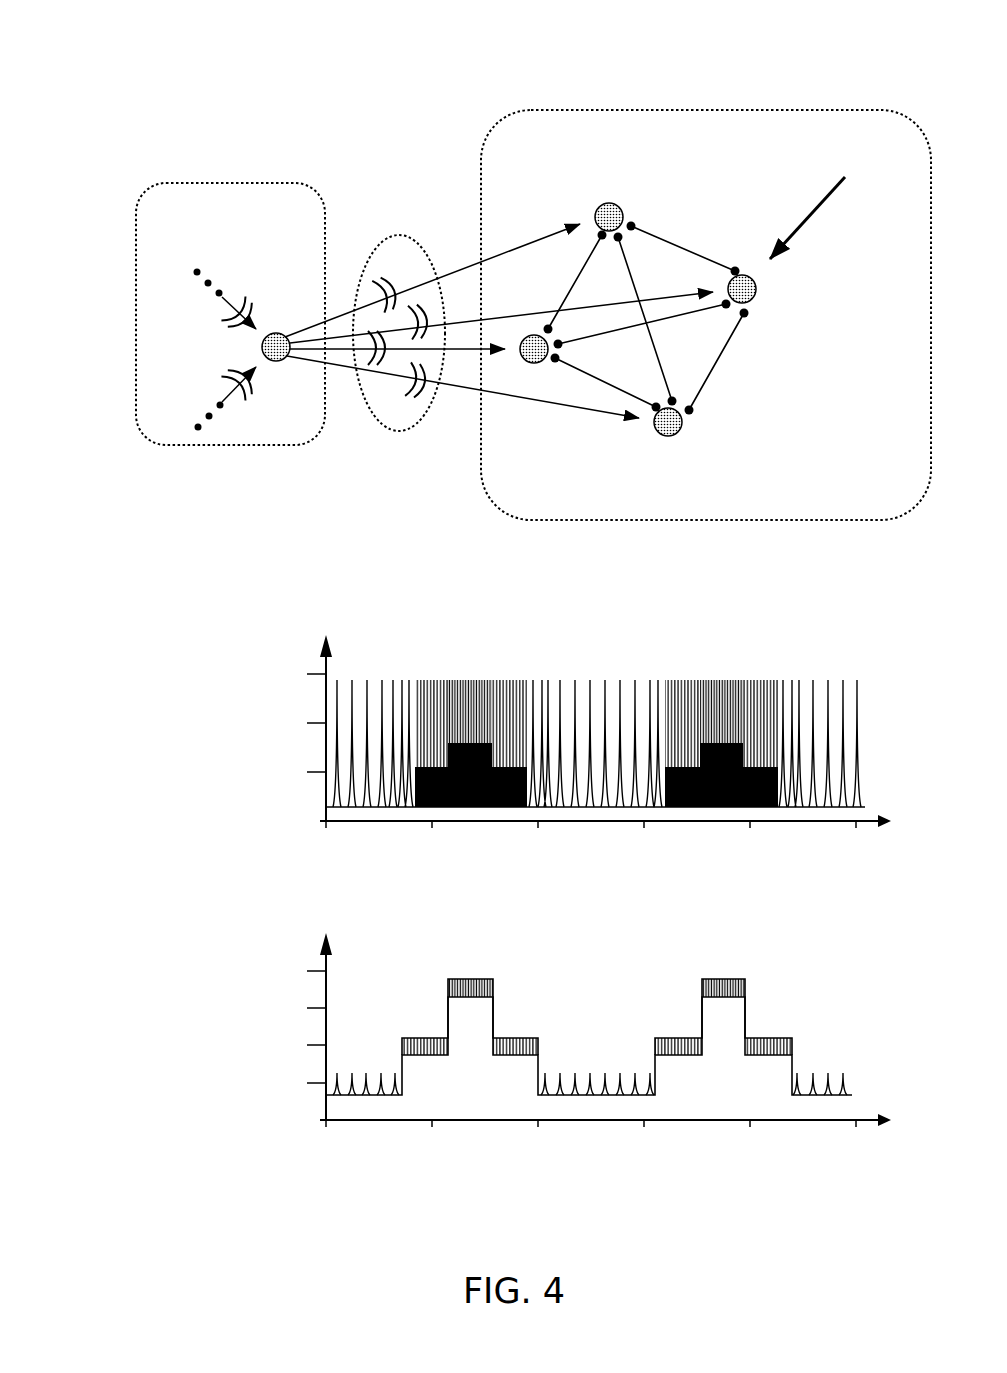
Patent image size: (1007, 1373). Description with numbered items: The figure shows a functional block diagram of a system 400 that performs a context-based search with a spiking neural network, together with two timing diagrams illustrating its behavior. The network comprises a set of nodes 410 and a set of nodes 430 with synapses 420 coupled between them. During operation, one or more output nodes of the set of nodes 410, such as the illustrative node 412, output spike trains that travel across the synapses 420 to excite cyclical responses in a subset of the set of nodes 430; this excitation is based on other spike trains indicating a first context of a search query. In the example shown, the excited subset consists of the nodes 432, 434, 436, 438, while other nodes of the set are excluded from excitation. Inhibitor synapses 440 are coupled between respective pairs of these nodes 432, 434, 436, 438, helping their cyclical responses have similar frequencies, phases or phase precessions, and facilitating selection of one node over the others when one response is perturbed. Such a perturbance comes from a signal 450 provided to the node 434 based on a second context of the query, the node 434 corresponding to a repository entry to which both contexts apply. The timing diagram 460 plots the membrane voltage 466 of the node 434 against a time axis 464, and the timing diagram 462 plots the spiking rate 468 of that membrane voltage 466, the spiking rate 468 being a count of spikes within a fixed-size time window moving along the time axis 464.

The system 400 is at (488, 262).
The set of nodes 410 is at (235, 183).
The node 412 is at (273, 333).
The synapses 420 is at (377, 423).
The set of nodes 430 is at (614, 108).
The node 432 is at (609, 203).
The node 434 is at (759, 289).
The node 436 is at (667, 437).
The node 438 is at (535, 362).
The inhibitor synapses 440 is at (634, 275).
The signal 450 is at (826, 201).
The timing diagram 460 is at (468, 711).
The timing diagram 462 is at (468, 1010).
The time axis 464 is at (605, 1005).
The membrane voltage 466 is at (474, 743).
The spiking rate 468 is at (495, 1039).